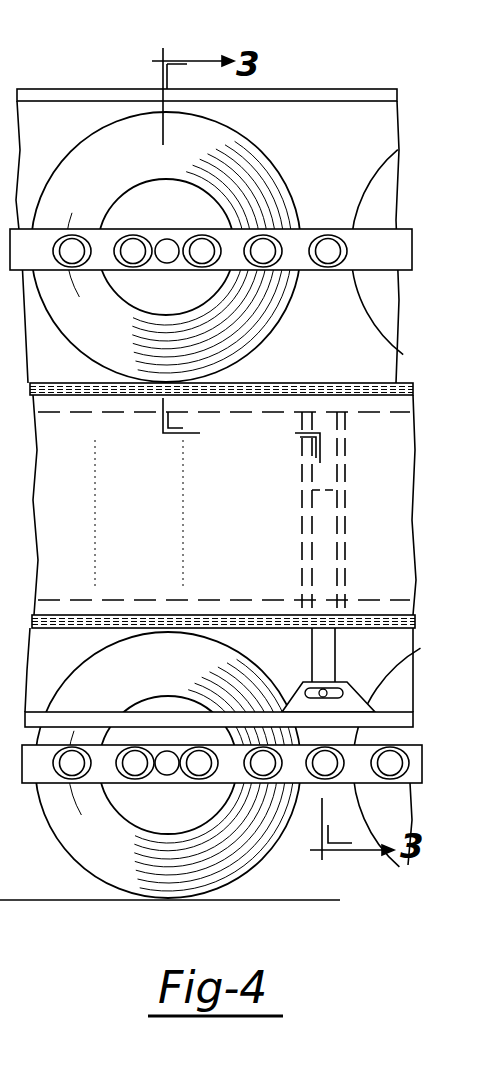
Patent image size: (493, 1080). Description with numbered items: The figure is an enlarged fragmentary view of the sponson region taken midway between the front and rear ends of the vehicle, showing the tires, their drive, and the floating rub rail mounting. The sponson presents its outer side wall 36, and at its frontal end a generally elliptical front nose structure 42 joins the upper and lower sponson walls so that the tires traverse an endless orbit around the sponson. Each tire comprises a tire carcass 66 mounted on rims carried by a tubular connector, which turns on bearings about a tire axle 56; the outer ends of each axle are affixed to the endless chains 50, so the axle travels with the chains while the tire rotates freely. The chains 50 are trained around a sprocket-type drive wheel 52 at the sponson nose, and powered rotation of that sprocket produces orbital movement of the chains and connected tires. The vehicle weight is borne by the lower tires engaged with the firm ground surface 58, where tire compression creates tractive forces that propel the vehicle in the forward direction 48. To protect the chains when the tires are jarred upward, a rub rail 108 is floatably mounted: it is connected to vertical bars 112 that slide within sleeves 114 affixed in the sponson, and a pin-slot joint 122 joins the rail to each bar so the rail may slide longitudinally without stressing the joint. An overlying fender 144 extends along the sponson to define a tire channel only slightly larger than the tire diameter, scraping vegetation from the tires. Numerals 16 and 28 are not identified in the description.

The fender 144 is at (300, 89).
The tire axle 56 is at (175, 240).
The endless chain 50 is at (235, 290).
The tire carcass 66 is at (243, 362).
The sprocket-type drive wheel 52 is at (38, 388).
The side wall 16 is at (19, 505).
The forward direction 48 is at (91, 518).
The front nose structure 42 is at (207, 635).
The lower rail 28 is at (206, 698).
The outer side wall 36 is at (141, 524).
The sleeve 114 is at (300, 527).
The pin-slot joint 122 is at (323, 690).
The vertical bar 112 is at (335, 640).
The rub rail 108 is at (73, 717).
The ground surface 58 is at (345, 886).